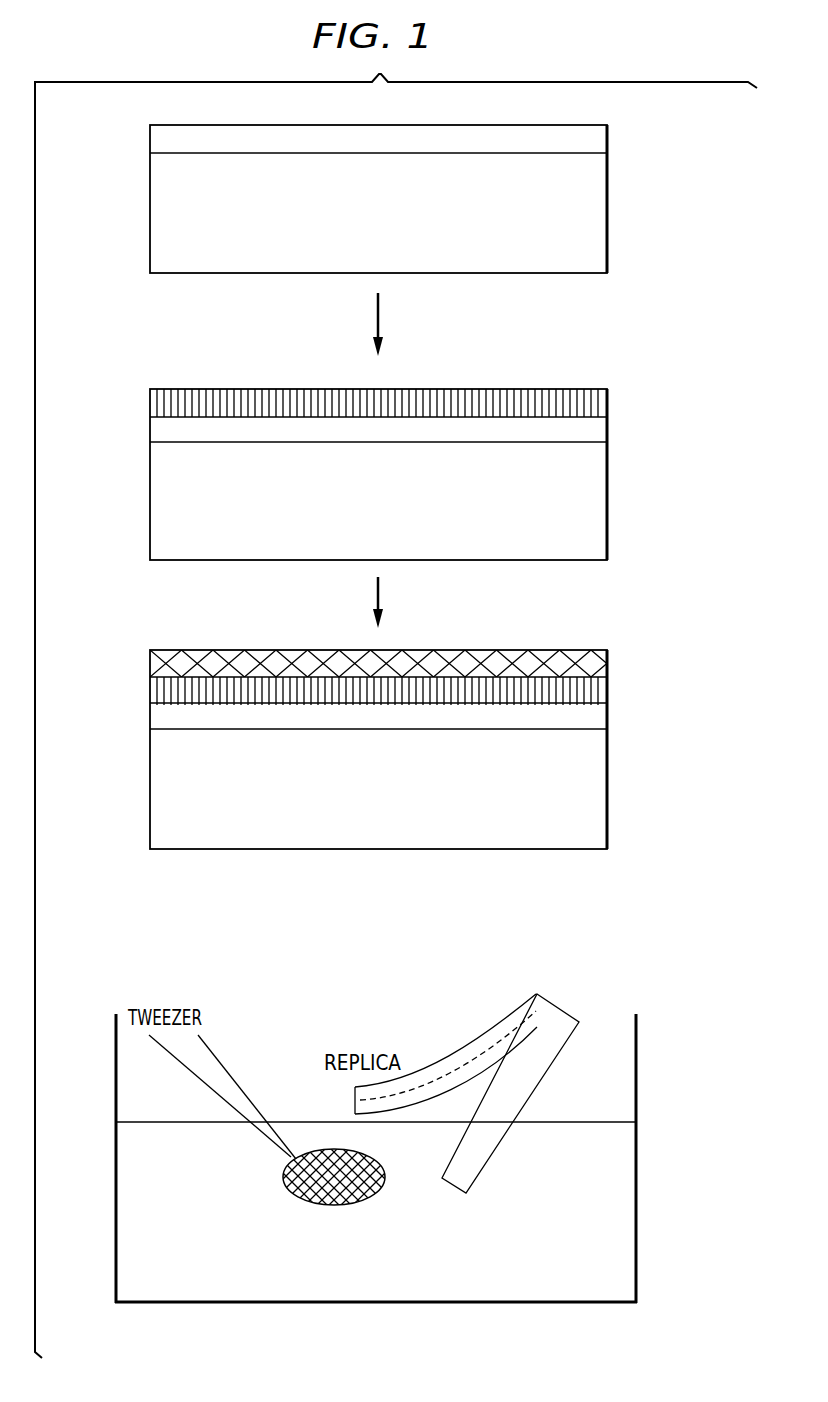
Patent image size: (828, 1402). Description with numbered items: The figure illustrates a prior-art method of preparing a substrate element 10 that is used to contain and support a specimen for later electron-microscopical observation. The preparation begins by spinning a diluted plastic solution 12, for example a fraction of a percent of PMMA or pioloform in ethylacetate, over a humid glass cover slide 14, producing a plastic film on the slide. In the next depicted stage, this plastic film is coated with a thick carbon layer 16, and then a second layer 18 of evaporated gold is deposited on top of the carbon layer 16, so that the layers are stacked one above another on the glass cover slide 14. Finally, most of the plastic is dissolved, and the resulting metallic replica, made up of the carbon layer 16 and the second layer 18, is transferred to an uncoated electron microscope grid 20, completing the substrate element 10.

The substrate element 10 is at (692, 299).
The diluted plastic solution 12 is at (598, 142).
The glass cover slide 14 is at (593, 226).
The carbon layer 16 is at (603, 407).
The second layer of evaporated gold 18 is at (595, 668).
The electron microscope grid 20 is at (334, 1196).